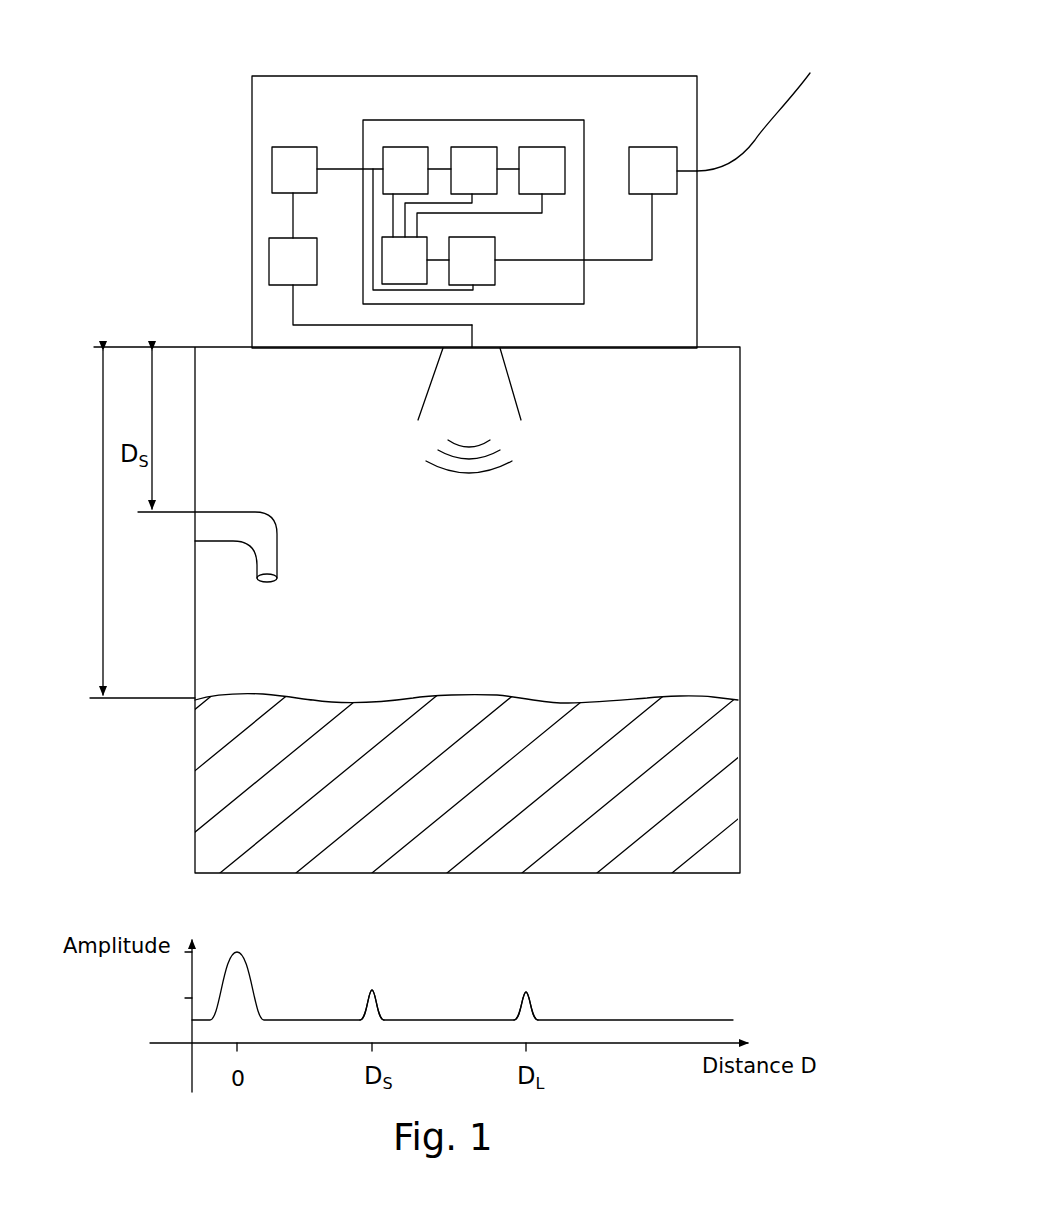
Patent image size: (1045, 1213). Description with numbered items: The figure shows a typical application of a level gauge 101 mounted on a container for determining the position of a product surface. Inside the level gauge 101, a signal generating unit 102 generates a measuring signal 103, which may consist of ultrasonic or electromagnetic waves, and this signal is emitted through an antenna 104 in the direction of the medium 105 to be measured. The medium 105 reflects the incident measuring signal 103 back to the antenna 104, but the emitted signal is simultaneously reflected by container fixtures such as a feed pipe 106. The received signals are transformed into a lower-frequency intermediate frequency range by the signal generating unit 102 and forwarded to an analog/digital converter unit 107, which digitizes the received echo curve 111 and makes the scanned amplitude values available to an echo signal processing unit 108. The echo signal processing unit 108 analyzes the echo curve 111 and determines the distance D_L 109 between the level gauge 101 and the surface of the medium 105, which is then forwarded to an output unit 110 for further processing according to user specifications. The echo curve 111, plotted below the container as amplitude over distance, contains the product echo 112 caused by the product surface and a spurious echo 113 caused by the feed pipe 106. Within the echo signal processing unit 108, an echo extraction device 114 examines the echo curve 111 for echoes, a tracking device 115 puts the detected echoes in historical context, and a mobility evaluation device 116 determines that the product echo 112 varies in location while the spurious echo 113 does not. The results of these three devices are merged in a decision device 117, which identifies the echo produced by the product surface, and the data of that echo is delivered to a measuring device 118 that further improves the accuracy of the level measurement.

The level gauge 101 is at (505, 76).
The signal generating unit 102 is at (269, 261).
The measuring signal 103 is at (497, 470).
The antenna 104 is at (516, 392).
The medium 105 is at (520, 698).
The feed pipe 106 is at (243, 512).
The analog/digital converter unit 107 is at (272, 169).
The echo signal processing unit 108 is at (487, 109).
The distance D_L 109 is at (77, 520).
The output unit 110 is at (650, 147).
The echo curve 111 is at (605, 1020).
The product echo 112 is at (525, 988).
The spurious echo 113 is at (372, 986).
The echo extraction device 114 is at (387, 147).
The tracking device 115 is at (455, 147).
The mobility evaluation device 116 is at (519, 147).
The decision device 117 is at (424, 238).
The measuring device 118 is at (496, 238).